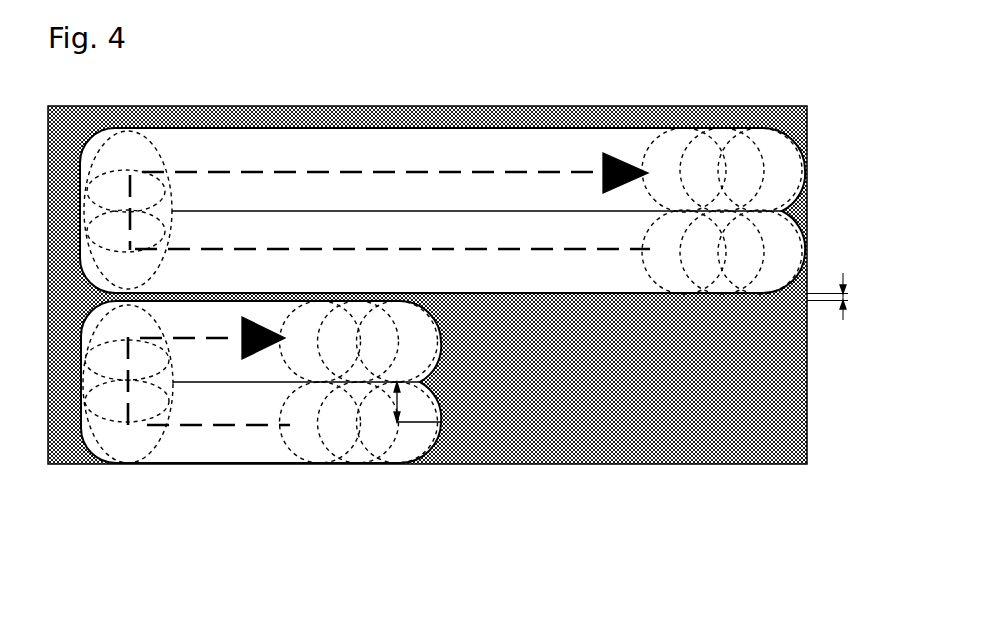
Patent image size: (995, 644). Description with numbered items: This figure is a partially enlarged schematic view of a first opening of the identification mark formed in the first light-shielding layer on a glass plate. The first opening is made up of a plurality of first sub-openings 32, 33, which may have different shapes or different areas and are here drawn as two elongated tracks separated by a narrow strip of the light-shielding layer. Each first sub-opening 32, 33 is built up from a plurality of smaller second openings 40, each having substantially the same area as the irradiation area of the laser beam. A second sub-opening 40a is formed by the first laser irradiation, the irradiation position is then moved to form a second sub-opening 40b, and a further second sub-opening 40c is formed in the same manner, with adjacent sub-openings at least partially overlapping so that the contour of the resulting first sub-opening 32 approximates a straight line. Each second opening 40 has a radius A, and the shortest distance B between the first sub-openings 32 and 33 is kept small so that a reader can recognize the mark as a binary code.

The first sub-opening 33 is at (247, 143).
The first sub-opening 32 is at (279, 455).
The second opening 40 is at (379, 455).
The second sub-opening 40a is at (416, 436).
The second sub-opening 40b is at (343, 453).
The second sub-opening 40c is at (298, 453).
The radius of second opening A is at (417, 402).
The shortest distance between first sub-openings B is at (838, 296).